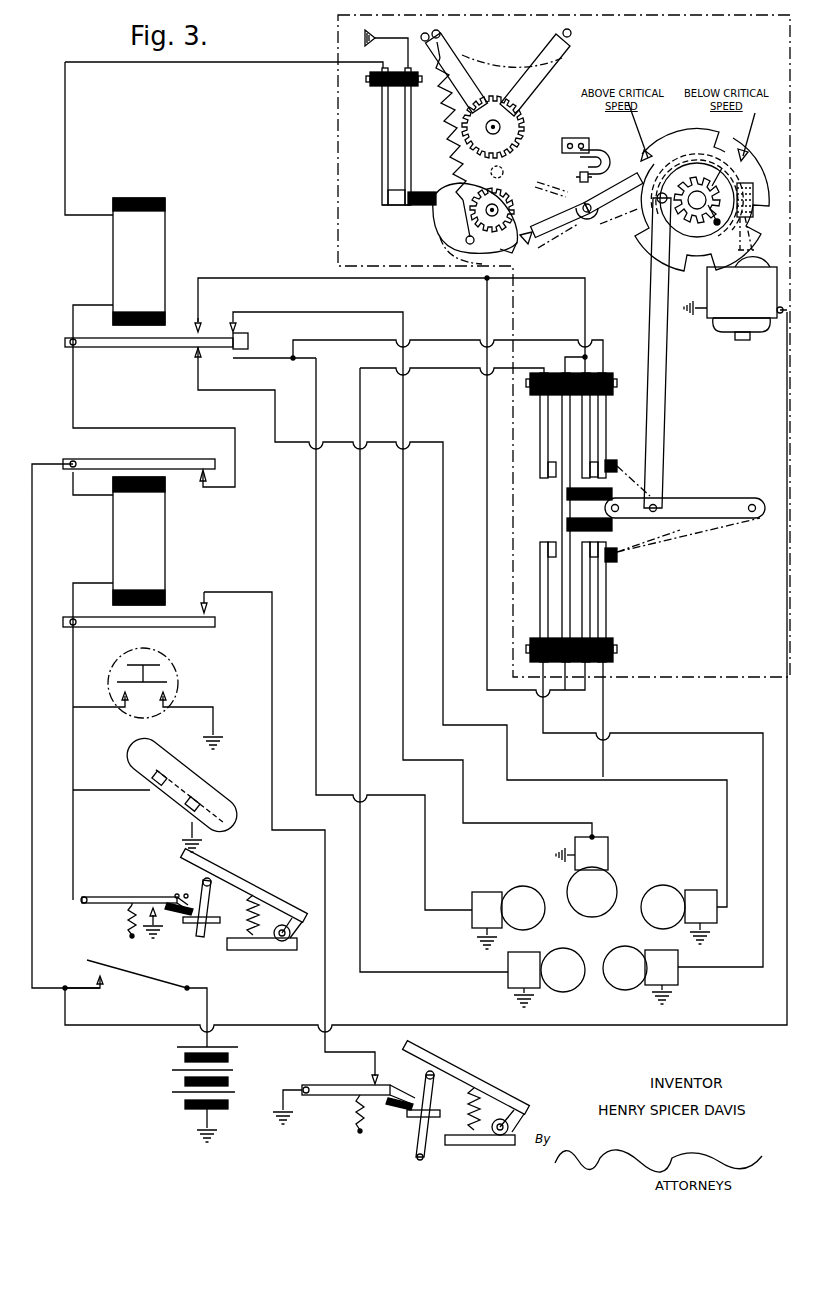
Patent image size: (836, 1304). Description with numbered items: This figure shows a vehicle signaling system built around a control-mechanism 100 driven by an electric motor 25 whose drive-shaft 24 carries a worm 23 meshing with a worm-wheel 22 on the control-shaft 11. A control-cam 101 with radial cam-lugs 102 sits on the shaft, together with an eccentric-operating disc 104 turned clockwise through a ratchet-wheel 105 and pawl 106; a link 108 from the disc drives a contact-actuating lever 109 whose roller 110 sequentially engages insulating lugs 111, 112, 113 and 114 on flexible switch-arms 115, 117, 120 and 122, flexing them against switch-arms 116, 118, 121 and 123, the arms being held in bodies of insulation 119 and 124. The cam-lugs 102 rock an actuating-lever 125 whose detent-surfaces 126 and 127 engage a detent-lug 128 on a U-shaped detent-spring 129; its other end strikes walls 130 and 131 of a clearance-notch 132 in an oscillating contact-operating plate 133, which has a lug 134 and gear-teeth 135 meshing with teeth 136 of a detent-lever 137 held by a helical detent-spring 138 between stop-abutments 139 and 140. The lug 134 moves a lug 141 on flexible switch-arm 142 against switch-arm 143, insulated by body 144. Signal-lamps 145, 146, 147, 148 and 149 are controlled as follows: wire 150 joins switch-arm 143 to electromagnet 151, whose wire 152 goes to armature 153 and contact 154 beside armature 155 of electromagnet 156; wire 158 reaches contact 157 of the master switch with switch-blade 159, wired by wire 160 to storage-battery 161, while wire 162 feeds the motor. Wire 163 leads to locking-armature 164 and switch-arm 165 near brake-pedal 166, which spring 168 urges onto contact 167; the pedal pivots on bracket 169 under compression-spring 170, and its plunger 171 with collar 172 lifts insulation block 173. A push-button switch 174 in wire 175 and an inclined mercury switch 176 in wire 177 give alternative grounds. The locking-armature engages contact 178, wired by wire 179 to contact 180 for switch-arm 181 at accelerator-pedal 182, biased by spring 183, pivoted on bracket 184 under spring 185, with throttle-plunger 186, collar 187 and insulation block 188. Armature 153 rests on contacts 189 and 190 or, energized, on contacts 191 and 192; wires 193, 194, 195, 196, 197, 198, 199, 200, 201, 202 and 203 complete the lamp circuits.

The control-shaft 11 is at (694, 212).
The worm-wheel 22 is at (722, 168).
The worm 23 is at (753, 196).
The drive-shaft 24 is at (752, 232).
The electric motor 25 is at (735, 298).
The control-mechanism 100 is at (338, 165).
The control-cam 101 is at (685, 135).
The cam-lugs 102 is at (748, 141).
The eccentric-operating disc 104 is at (628, 192).
The ratchet-wheel 105 is at (690, 168).
The pawl 106 is at (707, 222).
The link 108 is at (663, 389).
The contact-actuating lever 109 is at (685, 525).
The roller 110 is at (616, 503).
The lug 111 is at (613, 458).
The lug 112 is at (600, 502).
The lug 113 is at (567, 523).
The lug 114 is at (611, 564).
The flexible switch-arm 115 is at (607, 428).
The switch-arm 116 is at (586, 478).
The flexible switch-arm 117 is at (563, 440).
The switch-arm 118 is at (541, 437).
The body of insulation 119 is at (613, 389).
The flexible switch-arm 120 is at (562, 575).
The switch-arm 121 is at (540, 610).
The flexible switch-arm 122 is at (606, 612).
The switch-arm 123 is at (600, 633).
The body of insulation 124 is at (614, 650).
The actuating-lever 125 is at (592, 220).
The detent-surface 126 is at (560, 175).
The detent-surface 127 is at (600, 160).
The detent-lug 128 is at (586, 170).
The U-shaped detent-spring 129 is at (589, 140).
The wall 130 is at (556, 210).
The wall 131 is at (518, 252).
The clearance-notch 132 is at (533, 238).
The oscillating contact-operating plate 133 is at (492, 214).
The lug 134 is at (433, 216).
The gear-teeth 135 is at (488, 178).
The teeth 136 is at (517, 141).
The detent-lever 137 is at (460, 56).
The helical detent-spring 138 is at (450, 115).
The stop-abutment 139 is at (422, 37).
The stop-abutment 140 is at (572, 34).
The lug 141 is at (414, 194).
The flexible switch-arm 142 is at (411, 165).
The switch-arm 143 is at (382, 140).
The body of insulation 144 is at (370, 80).
The signal-lamp 145 is at (508, 917).
The signal-lamp 146 is at (546, 977).
The signal-lamp 147 is at (640, 975).
The signal-lamp 148 is at (679, 914).
The signal-lamp 149 is at (586, 877).
The wire 150 is at (97, 70).
The electromagnet 151 is at (139, 261).
The wire 152 is at (108, 305).
The armature 153 is at (117, 347).
The contact 154 is at (201, 478).
The armature 155 is at (165, 458).
The electromagnet 156 is at (139, 541).
The contact 157 is at (103, 980).
The wire 158 is at (100, 495).
The pivotal switch-blade 159 is at (152, 977).
The wire 160 is at (208, 1005).
The storage-battery 161 is at (230, 1086).
The wire 162 is at (100, 1025).
The wire 163 is at (86, 583).
The locking-armature 164 is at (165, 627).
The pivotal switch-arm 165 is at (145, 897).
The brake-pedal 166 is at (262, 890).
The contact 167 is at (184, 920).
The helical spring 168 is at (128, 928).
The bracket 169 is at (272, 950).
The helical compression-spring 170 is at (250, 910).
The brake-operating plunger 171 is at (212, 906).
The collar 172 is at (202, 940).
The block of insulation 173 is at (185, 895).
The push-button switch 174 is at (179, 682).
The wire 175 is at (102, 708).
The mercury switch 176 is at (205, 785).
The wire 177 is at (120, 790).
The contact 178 is at (204, 598).
The wire 179 is at (272, 612).
The contact 180 is at (372, 1076).
The pivotal switch-arm 181 is at (330, 1083).
The accelerator-pedal 182 is at (460, 1075).
The helical spring 183 is at (356, 1112).
The bracket 184 is at (500, 1146).
The helical compression-spring 185 is at (468, 1098).
The throttle-plunger 186 is at (425, 1158).
The collar 187 is at (410, 1118).
The block of insulation 188 is at (398, 1110).
The contact 189 is at (196, 354).
The contact 190 is at (246, 355).
The contact 191 is at (196, 326).
The contact 192 is at (232, 326).
The wire 193 is at (240, 392).
The wire 194 is at (316, 389).
The wire 195 is at (603, 707).
The wire 196 is at (355, 340).
The wire 197 is at (270, 278).
The wire 198 is at (564, 357).
The wire 199 is at (487, 300).
The wire 200 is at (565, 692).
The wire 201 is at (320, 312).
The wire 202 is at (452, 370).
The wire 203 is at (543, 706).